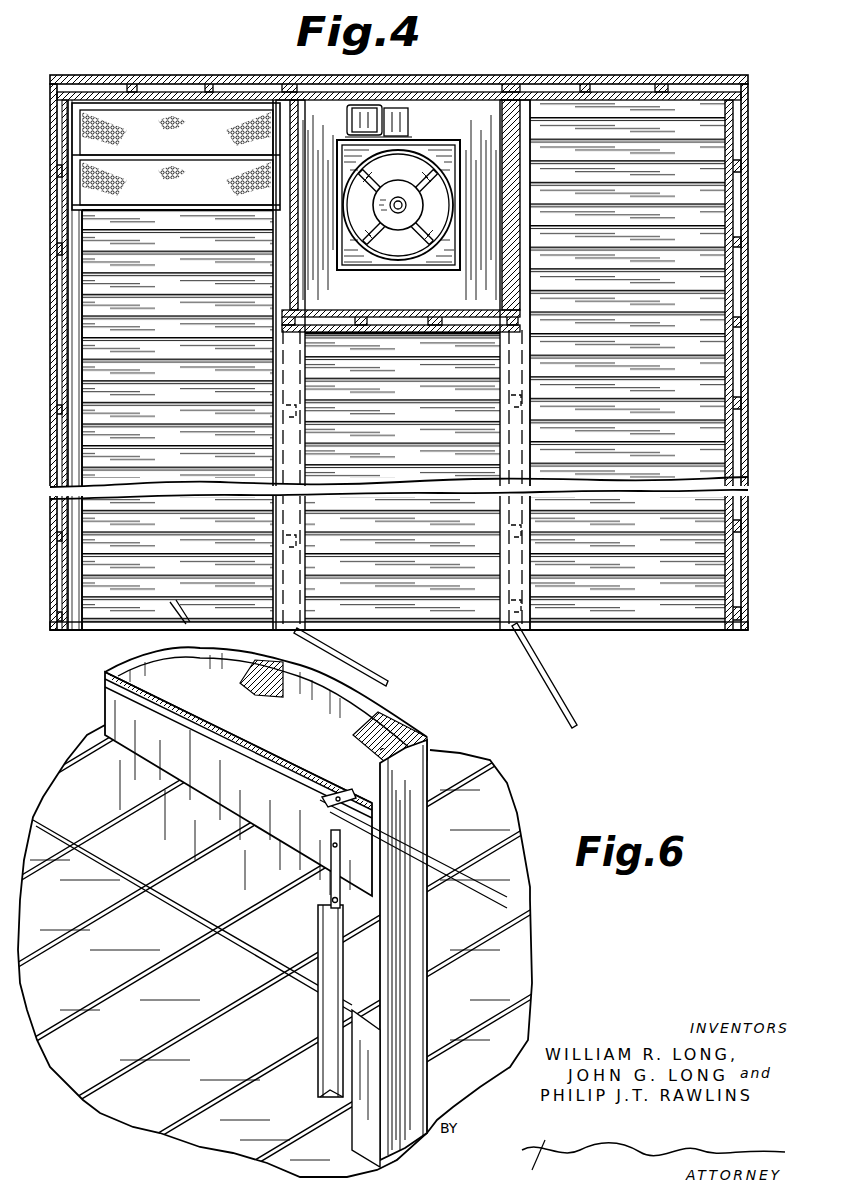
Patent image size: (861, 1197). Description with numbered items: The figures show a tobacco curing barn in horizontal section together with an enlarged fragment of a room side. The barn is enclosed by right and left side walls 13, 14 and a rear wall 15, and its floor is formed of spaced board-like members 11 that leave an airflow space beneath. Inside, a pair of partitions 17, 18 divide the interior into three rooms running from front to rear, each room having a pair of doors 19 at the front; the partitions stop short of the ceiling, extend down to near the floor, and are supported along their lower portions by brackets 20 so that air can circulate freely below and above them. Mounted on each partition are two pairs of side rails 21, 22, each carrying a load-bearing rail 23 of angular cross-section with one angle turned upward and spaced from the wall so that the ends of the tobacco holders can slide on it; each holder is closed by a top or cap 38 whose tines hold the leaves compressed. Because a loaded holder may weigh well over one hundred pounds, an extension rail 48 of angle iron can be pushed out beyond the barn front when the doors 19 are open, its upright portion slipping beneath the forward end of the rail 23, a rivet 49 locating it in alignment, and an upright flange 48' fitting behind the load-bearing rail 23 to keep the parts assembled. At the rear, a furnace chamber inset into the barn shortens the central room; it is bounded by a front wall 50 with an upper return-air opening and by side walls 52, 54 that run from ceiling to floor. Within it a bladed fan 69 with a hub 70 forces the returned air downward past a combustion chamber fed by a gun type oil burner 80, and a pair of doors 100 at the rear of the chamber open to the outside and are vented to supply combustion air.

In FIG. 4, the doors 100 is at (395, 76).
In FIG. 4, the rear wall 15 is at (589, 75).
In FIG. 4, the right side wall 13 is at (52, 421).
In FIG. 4, the left side wall 14 is at (748, 362).
In FIG. 4, the board-like members 11 is at (80, 452).
In FIG. 6, the board-like members 11 is at (118, 900).
In FIG. 4, the partition 17 is at (280, 382).
In FIG. 6, the partition 17 is at (90, 755).
In FIG. 4, the partition 18 is at (515, 383).
In FIG. 4, the doors 19 is at (186, 622).
In FIG. 6, the brackets 20 is at (226, 940).
In FIG. 4, the side rail 21 is at (82, 390).
In FIG. 6, the side rail 22 is at (165, 762).
In FIG. 6, the load-bearing rail 23 is at (199, 728).
In FIG. 4, the top or cap 38 is at (189, 158).
In FIG. 6, the extension rail 48 is at (308, 999).
In FIG. 6, the upright flange 48' is at (311, 869).
In FIG. 6, the rivet 49 is at (339, 799).
In FIG. 4, the front wall 50 is at (407, 318).
In FIG. 4, the side wall 52 is at (298, 118).
In FIG. 4, the side wall 54 is at (502, 117).
In FIG. 4, the bladed fan 69 is at (425, 170).
In FIG. 4, the hub 70 is at (412, 207).
In FIG. 4, the gun type oil burner 80 is at (396, 113).